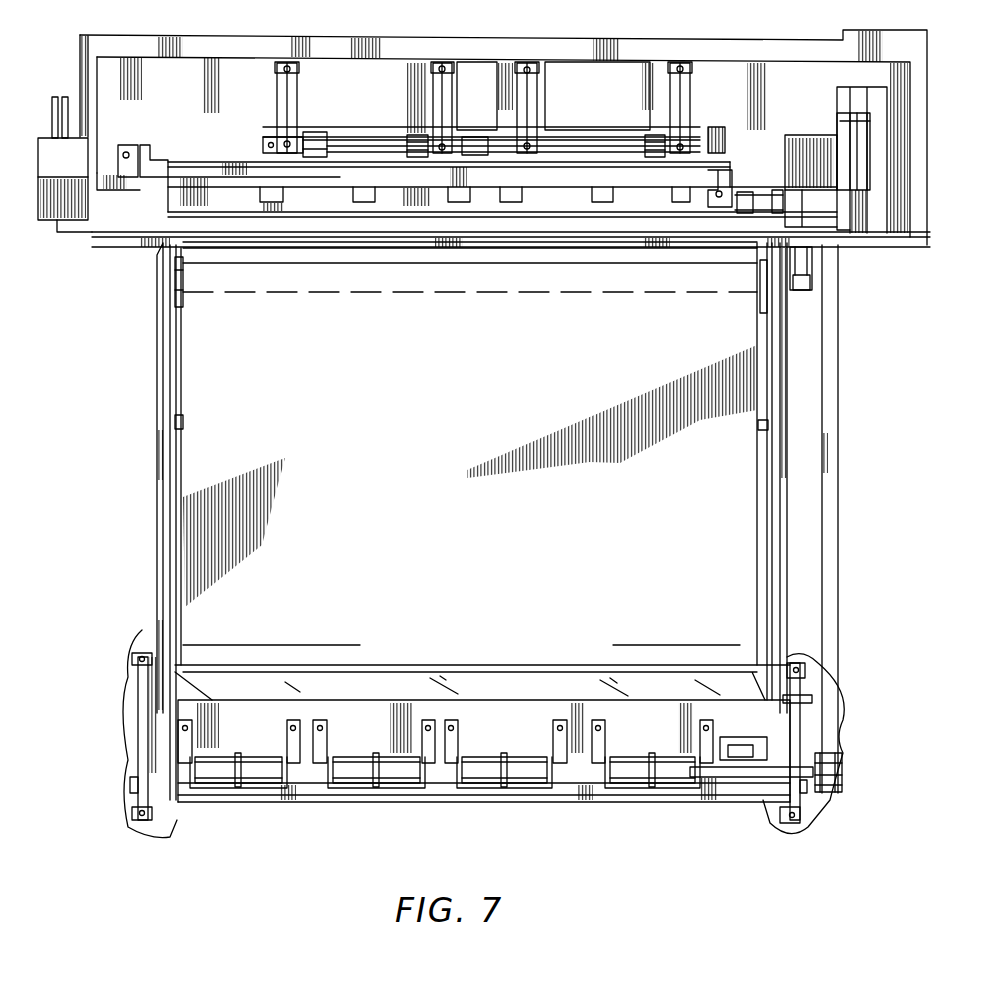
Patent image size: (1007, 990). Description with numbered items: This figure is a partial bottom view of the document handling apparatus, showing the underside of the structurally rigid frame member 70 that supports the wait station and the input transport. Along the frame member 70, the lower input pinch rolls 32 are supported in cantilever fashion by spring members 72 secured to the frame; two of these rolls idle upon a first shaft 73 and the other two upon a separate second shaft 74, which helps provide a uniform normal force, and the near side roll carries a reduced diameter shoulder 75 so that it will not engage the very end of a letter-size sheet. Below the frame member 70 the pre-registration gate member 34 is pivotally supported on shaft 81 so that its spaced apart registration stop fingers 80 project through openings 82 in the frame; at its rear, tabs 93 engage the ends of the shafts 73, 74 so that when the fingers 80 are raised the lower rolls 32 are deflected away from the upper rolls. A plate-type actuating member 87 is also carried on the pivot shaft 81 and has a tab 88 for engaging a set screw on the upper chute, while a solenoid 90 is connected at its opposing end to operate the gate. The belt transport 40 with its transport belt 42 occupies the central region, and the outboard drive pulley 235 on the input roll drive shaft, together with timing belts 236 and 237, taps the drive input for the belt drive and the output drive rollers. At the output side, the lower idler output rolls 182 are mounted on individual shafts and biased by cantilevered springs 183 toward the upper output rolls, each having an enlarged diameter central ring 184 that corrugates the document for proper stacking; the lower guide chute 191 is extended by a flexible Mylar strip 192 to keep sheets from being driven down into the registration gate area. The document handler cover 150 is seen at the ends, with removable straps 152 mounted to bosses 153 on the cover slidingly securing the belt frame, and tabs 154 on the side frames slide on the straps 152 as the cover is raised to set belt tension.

The frame member 70 is at (712, 47).
The solenoid 90 is at (82, 165).
The tab 88 is at (143, 148).
The plate-type actuating member 87 is at (152, 172).
The shaft 81 is at (207, 167).
The registration stop fingers 80 is at (365, 193).
The openings 82 is at (287, 194).
The spring members 72 is at (443, 109).
The first shaft 73 is at (350, 140).
The second shaft 74 is at (585, 147).
The lower input pinch rolls 32 is at (420, 140).
The reduced diameter shoulder 75 is at (317, 140).
The tabs 93 is at (267, 153).
The pre-registration gate member 34 is at (717, 172).
The outboard drive pulley 235 is at (840, 112).
The belt transport 40 is at (148, 371).
The transport belt 42 is at (200, 422).
The timing belt 236 is at (812, 285).
The timing belt 237 is at (832, 350).
The Mylar strip 192 is at (412, 683).
The lower guide chute 191 is at (472, 712).
The enlarged diameter central ring 184 is at (240, 760).
The cantilevered spring 183 is at (325, 745).
The lower idler output rolls 182 is at (533, 777).
The document handler cover 150 is at (122, 730).
The removable straps 152 is at (148, 712).
The bosses 153 is at (137, 660).
The tabs 154 is at (137, 787).